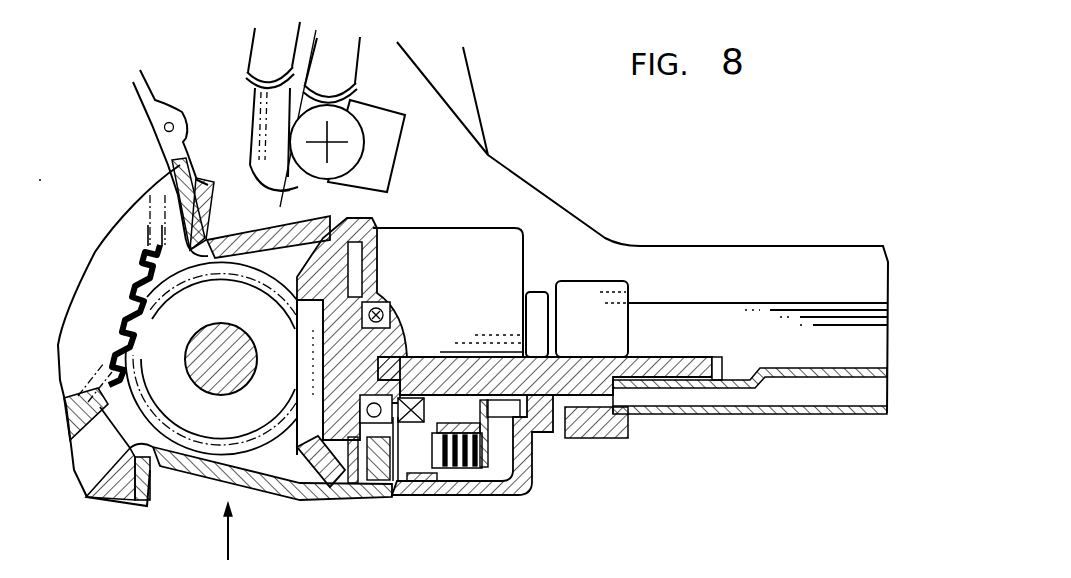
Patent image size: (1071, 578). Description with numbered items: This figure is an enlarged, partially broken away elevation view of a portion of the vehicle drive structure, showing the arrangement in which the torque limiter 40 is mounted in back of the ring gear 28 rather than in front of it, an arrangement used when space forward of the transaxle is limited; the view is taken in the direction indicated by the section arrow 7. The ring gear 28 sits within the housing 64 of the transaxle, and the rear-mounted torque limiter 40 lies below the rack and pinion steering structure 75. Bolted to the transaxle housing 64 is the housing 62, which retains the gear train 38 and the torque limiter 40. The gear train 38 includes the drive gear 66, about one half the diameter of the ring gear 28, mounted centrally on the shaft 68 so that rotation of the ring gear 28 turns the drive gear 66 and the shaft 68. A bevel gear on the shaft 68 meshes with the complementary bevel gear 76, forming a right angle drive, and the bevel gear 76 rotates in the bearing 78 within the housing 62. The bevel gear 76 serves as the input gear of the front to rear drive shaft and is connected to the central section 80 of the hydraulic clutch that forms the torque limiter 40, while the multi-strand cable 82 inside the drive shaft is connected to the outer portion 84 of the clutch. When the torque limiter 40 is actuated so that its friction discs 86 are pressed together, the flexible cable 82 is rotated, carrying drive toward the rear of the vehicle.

The ring gear 28 is at (120, 262).
The housing of the transaxle 64 is at (157, 90).
The rack and pinion steering structure 75 is at (256, 152).
The complementary bevel gear 76 is at (298, 255).
The torque limiter 40 is at (442, 230).
The bearing 78 is at (387, 300).
The central section of the hydraulic clutch 80 is at (435, 358).
The shaft 68 is at (241, 325).
The drive gear 66 is at (200, 458).
The section line 7 is at (232, 540).
The gear train 38 is at (320, 492).
The housing 62 is at (458, 498).
The friction discs 86 is at (440, 490).
The outer portion of the hydraulic clutch 84 is at (533, 486).
The multi-strand cable 82 is at (817, 378).